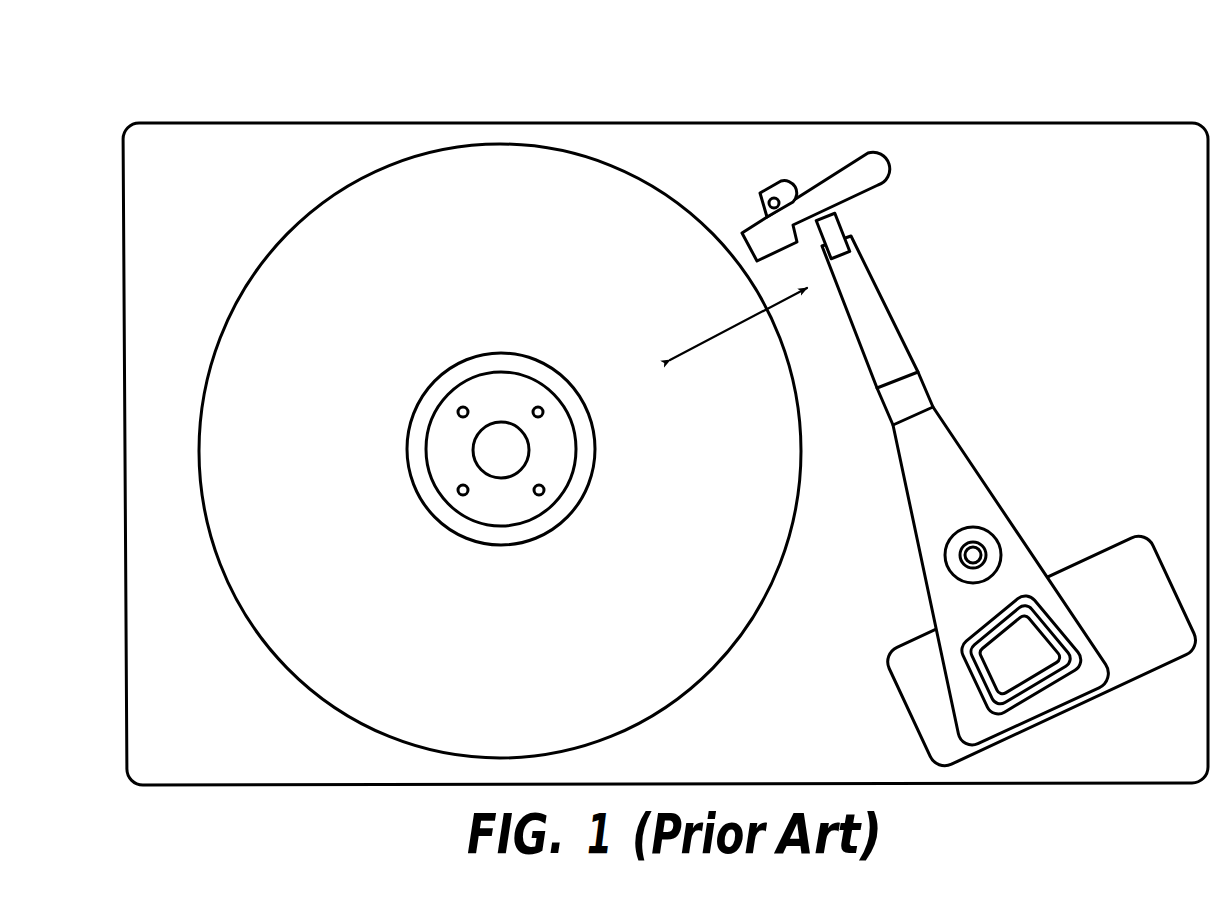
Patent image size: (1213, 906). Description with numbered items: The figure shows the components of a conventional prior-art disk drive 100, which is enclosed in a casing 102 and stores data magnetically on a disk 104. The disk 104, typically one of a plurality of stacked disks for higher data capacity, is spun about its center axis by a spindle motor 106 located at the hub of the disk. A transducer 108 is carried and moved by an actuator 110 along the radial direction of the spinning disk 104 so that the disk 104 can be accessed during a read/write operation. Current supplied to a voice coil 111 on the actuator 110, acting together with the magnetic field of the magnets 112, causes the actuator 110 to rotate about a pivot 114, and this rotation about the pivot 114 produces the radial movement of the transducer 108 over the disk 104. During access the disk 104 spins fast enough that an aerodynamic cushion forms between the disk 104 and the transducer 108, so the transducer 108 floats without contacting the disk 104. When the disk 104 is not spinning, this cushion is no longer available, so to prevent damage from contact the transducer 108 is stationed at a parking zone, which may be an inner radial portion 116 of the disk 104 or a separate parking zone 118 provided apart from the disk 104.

The disk drive 100 is at (197, 64).
The casing 102 is at (650, 121).
The disk 104 is at (271, 245).
The spindle motor 106 is at (498, 396).
The transducer 108 is at (848, 227).
The actuator 110 is at (949, 421).
The voice coil 111 is at (1069, 632).
The magnets 112 is at (1097, 546).
The pivot 114 is at (967, 525).
The inner radial portion 116 is at (582, 446).
The separate parking zone 118 is at (880, 189).